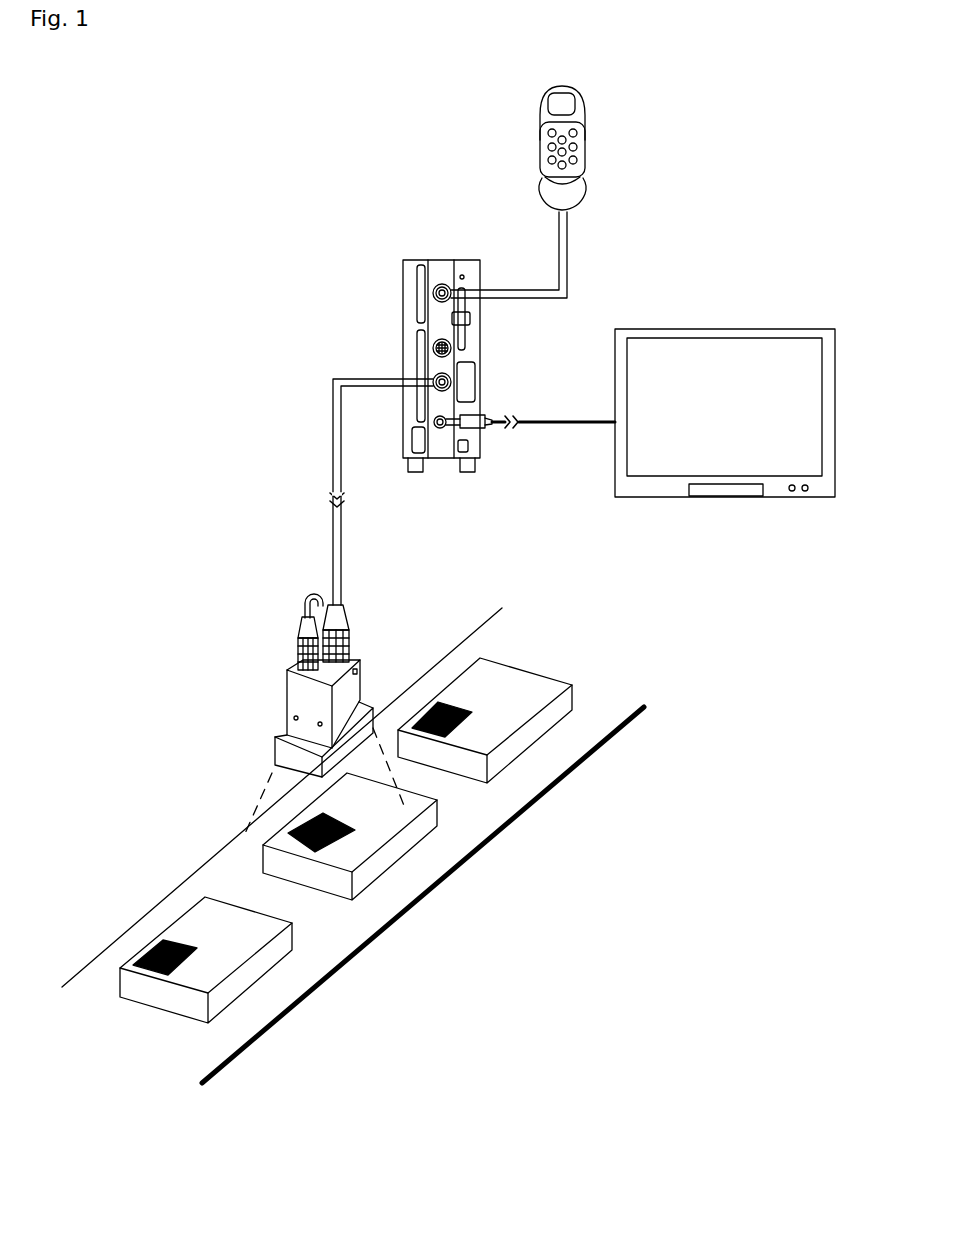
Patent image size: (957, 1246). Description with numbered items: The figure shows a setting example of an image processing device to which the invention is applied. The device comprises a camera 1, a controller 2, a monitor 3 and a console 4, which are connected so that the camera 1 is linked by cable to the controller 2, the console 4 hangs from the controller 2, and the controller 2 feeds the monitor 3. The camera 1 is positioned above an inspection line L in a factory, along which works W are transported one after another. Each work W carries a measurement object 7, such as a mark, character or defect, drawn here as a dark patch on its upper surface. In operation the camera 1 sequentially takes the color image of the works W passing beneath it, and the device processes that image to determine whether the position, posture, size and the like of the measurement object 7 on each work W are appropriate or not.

The camera 1 is at (290, 702).
The controller 2 is at (442, 258).
The monitor 3 is at (798, 328).
The console 4 is at (588, 114).
The measurement object 7 is at (460, 722).
The work W is at (485, 678).
The conveyor line L is at (492, 812).